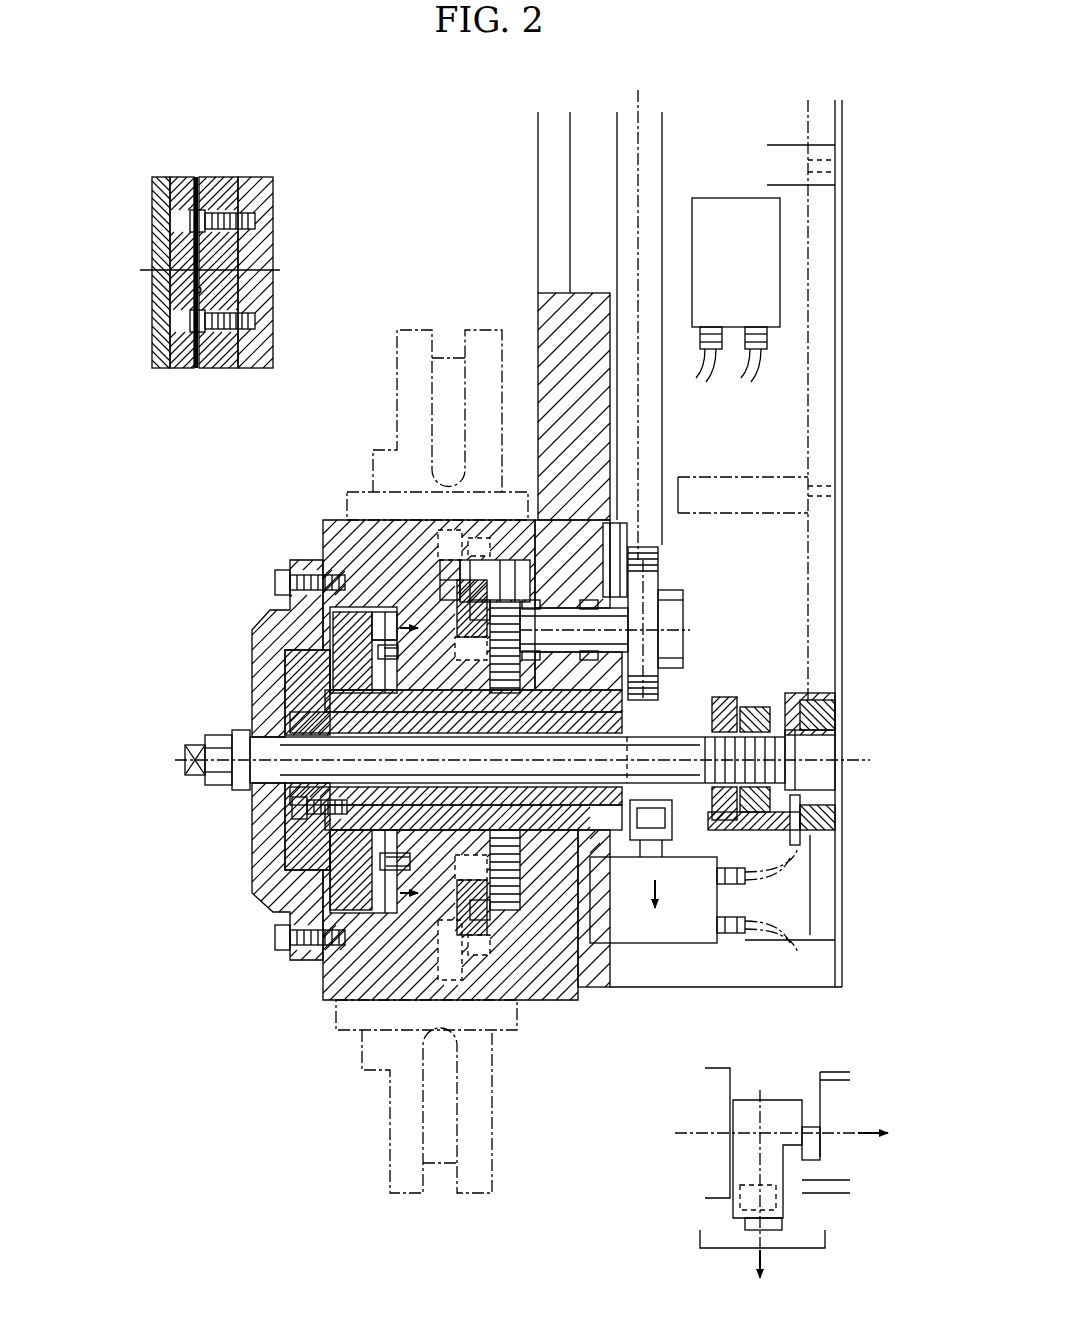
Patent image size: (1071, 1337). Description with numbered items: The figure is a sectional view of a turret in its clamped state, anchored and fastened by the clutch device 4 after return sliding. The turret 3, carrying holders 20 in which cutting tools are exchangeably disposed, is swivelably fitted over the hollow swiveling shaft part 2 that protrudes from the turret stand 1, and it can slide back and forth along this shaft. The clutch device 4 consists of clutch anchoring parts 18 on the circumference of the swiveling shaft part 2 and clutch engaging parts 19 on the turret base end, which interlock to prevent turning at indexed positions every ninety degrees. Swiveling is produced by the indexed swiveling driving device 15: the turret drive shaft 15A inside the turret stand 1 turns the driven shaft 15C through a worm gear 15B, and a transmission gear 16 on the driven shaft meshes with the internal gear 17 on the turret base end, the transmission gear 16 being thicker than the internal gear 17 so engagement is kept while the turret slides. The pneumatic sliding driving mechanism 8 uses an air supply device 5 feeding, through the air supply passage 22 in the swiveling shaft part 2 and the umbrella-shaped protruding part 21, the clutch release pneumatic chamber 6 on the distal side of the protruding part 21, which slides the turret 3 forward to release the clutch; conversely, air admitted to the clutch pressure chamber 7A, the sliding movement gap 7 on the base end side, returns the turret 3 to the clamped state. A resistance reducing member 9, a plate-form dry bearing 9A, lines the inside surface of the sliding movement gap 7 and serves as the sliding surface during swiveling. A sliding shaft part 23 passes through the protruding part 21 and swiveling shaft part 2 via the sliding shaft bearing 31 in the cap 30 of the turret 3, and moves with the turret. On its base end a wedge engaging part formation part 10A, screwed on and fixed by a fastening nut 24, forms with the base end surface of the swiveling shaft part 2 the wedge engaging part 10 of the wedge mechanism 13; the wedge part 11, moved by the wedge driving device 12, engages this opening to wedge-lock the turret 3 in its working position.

The turret stand 1 is at (540, 318).
The swiveling shaft part 2 is at (440, 1002).
The turret 3 is at (160, 345).
The clutch device 4 is at (178, 162).
The air supply device 5 is at (792, 290).
The clutch release pneumatic chamber 6 is at (300, 880).
The sliding movement gap 7 is at (325, 970).
The clutch pressure chamber 7A is at (328, 966).
The pneumatic sliding driving mechanism 8 is at (255, 908).
The resistance reducing member 9 is at (365, 600).
The dry bearing 9A is at (367, 612).
The wedge engaging part 10 is at (690, 825).
The wedge engaging part formation part 10A is at (724, 697).
The wedge part 11 is at (679, 732).
The wedge driving device 12 is at (676, 955).
The wedge mechanism 13 is at (740, 668).
The indexed swiveling driving device 15 is at (677, 572).
The turret drive shaft 15A is at (662, 172).
The worm gear 15B is at (672, 600).
The driven shaft 15C is at (598, 592).
The transmission gear 16 is at (506, 620).
The internal gear 17 is at (530, 895).
The clutch anchoring part 18 is at (193, 240).
The clutch engaging part 19 is at (195, 295).
The holder 20 is at (427, 328).
The protruding part 21 is at (330, 625).
The air supply passage 22 is at (290, 700).
The sliding shaft part 23 is at (292, 810).
The fastening nut 24 is at (792, 692).
The cap 30 is at (258, 645).
The sliding shaft bearing 31 is at (238, 735).